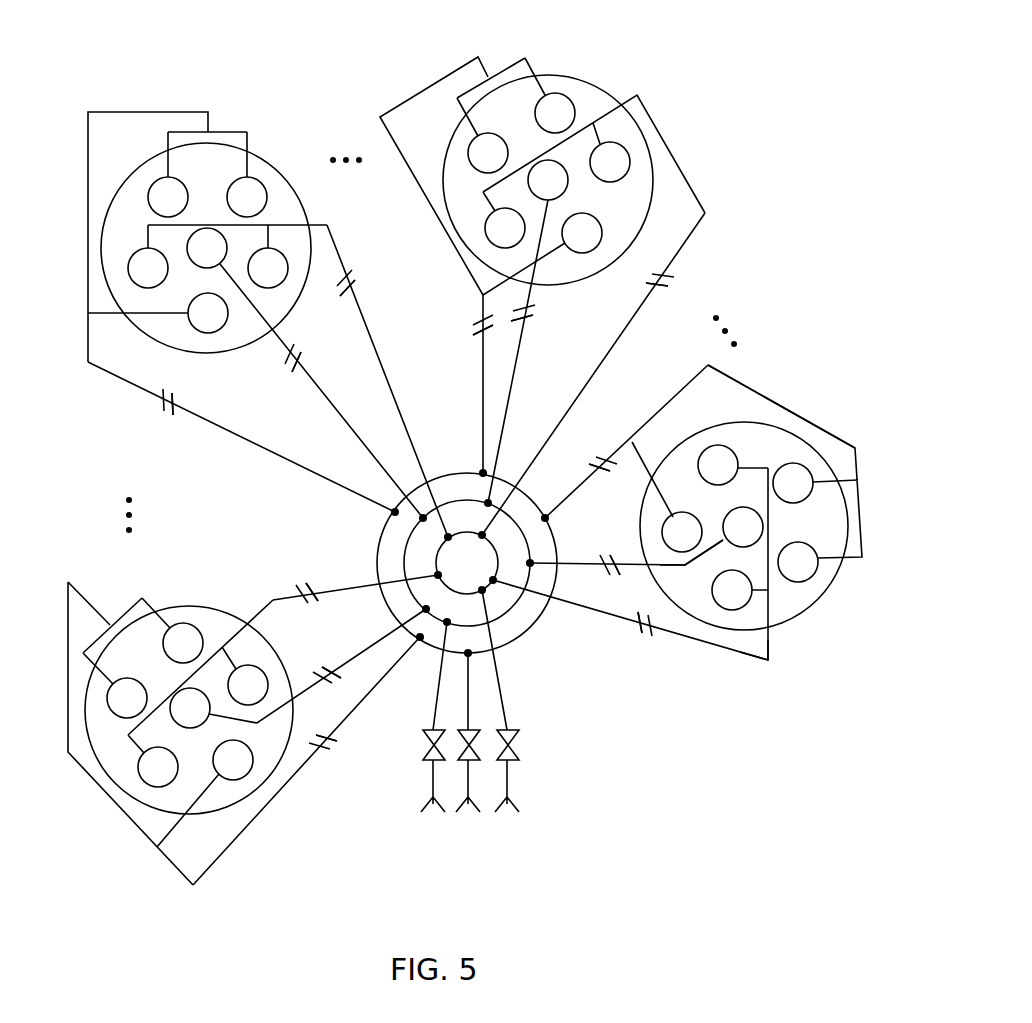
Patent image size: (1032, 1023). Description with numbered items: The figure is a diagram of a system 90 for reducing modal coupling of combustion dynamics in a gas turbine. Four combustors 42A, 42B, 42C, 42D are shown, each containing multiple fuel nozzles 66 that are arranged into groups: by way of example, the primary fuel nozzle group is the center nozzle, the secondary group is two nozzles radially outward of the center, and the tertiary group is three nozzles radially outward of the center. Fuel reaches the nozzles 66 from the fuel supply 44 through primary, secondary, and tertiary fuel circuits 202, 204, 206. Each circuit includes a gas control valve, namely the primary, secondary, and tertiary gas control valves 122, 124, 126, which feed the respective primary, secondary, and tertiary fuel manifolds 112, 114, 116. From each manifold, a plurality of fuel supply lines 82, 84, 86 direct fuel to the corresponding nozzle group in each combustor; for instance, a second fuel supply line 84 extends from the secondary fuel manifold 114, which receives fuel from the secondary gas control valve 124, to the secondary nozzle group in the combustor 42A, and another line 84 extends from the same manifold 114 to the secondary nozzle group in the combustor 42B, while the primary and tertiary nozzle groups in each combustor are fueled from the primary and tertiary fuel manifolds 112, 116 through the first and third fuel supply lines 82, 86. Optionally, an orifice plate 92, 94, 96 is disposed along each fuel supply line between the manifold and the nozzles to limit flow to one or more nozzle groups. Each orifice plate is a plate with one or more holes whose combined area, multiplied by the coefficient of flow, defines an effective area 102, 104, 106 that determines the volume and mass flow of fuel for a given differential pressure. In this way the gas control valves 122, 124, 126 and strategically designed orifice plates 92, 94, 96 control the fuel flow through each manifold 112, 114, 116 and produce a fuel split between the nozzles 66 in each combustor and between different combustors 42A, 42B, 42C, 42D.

The system for reducing modal coupling of combustion dynamics 90 is at (722, 42).
The combustor 42A is at (165, 600).
The combustor 42B is at (286, 170).
The combustor 42C is at (592, 78).
The combustor 42D is at (826, 596).
The fuel nozzles 66 is at (166, 280).
The first fuel supply line 82 is at (365, 442).
The second fuel supply line 84 is at (383, 392).
The third fuel supply line 86 is at (285, 458).
The orifice plate 92 is at (284, 366).
The orifice plate 94 is at (347, 272).
The orifice plate 96 is at (160, 402).
The effective area 102 is at (295, 352).
The effective area 104 is at (352, 286).
The effective area 106 is at (172, 412).
The primary fuel manifold 112 is at (532, 605).
The secondary fuel manifold 114 is at (437, 545).
The tertiary fuel manifold 116 is at (448, 470).
The primary gas control valve 122 is at (428, 746).
The secondary gas control valve 124 is at (513, 745).
The tertiary gas control valve 126 is at (465, 748).
The fuel supply 44 is at (424, 806).
The primary fuel circuit 202 is at (682, 572).
The secondary fuel circuit 204 is at (750, 666).
The tertiary fuel circuit 206 is at (805, 402).